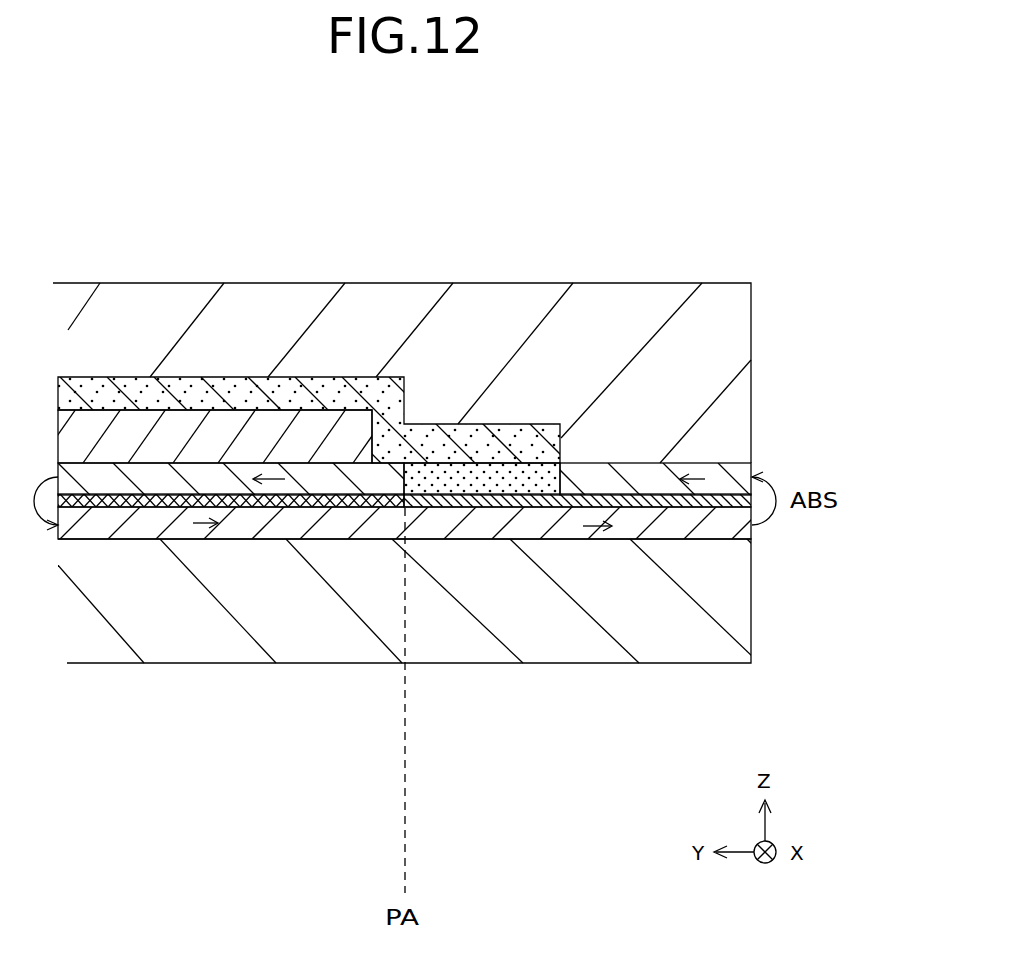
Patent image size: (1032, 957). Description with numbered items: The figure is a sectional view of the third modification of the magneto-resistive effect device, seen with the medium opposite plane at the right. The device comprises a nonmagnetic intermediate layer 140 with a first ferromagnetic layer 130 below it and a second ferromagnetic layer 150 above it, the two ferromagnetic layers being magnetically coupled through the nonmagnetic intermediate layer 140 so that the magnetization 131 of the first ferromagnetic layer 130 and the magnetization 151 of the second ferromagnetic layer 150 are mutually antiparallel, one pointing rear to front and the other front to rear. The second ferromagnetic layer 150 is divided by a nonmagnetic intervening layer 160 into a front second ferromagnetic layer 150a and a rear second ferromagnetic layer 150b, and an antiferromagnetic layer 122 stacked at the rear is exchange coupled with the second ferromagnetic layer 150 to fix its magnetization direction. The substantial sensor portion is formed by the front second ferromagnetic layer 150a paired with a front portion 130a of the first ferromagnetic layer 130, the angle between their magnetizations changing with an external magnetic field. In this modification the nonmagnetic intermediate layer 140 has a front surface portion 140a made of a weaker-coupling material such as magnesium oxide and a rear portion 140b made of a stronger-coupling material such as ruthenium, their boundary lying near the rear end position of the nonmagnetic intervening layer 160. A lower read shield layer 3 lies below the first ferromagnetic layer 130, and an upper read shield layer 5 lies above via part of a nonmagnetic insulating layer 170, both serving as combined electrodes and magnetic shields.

The lower read shield layer 3 is at (288, 635).
The upper read shield layer 5 is at (286, 304).
The antiferromagnetic layer 122 is at (152, 427).
The first ferromagnetic layer 130 is at (648, 532).
The front portion of the first ferromagnetic layer 130a is at (697, 527).
The magnetization of the first ferromagnetic layer 131 is at (597, 528).
The nonmagnetic intermediate layer 140 is at (608, 753).
The front surface portion of the nonmagnetic intermediate layer 140a is at (540, 507).
The rear portion of the nonmagnetic intermediate layer 140b is at (262, 500).
The second ferromagnetic layer 150 is at (851, 335).
The front second ferromagnetic layer 150a is at (718, 481).
The rear second ferromagnetic layer 150b is at (360, 480).
The magnetization of the second ferromagnetic layer 151 is at (695, 478).
The nonmagnetic intervening layer 160 is at (495, 485).
The nonmagnetic insulating layer 170 is at (360, 388).